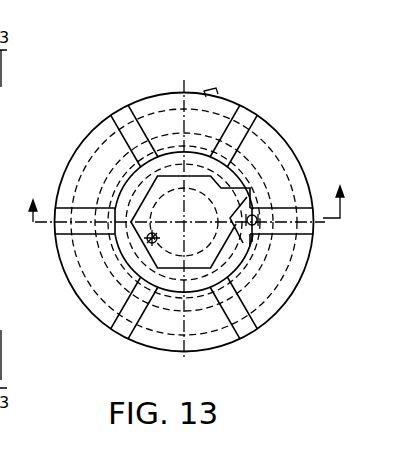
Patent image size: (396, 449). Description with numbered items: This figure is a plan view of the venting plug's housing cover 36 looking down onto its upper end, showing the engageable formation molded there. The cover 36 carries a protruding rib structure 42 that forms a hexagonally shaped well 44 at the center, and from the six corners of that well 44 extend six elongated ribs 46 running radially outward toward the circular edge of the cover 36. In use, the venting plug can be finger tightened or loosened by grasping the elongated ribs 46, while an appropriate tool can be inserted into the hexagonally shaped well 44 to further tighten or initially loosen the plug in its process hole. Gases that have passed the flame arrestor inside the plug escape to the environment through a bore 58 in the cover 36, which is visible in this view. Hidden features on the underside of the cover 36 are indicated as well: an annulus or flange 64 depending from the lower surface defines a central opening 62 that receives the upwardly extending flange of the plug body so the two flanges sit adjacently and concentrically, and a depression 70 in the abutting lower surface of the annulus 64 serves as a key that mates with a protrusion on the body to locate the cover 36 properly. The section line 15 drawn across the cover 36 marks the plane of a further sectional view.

The housing cover 36 is at (275, 315).
The protruding rib structure 42 is at (258, 117).
The hexagonally shaped well 44 is at (223, 238).
The elongated ribs 46 is at (241, 296).
The bore 58 is at (60, 317).
The central opening 62 is at (212, 92).
The annulus or flange 64 is at (300, 152).
The depression 70 is at (292, 192).
The section line 15 is at (188, 212).